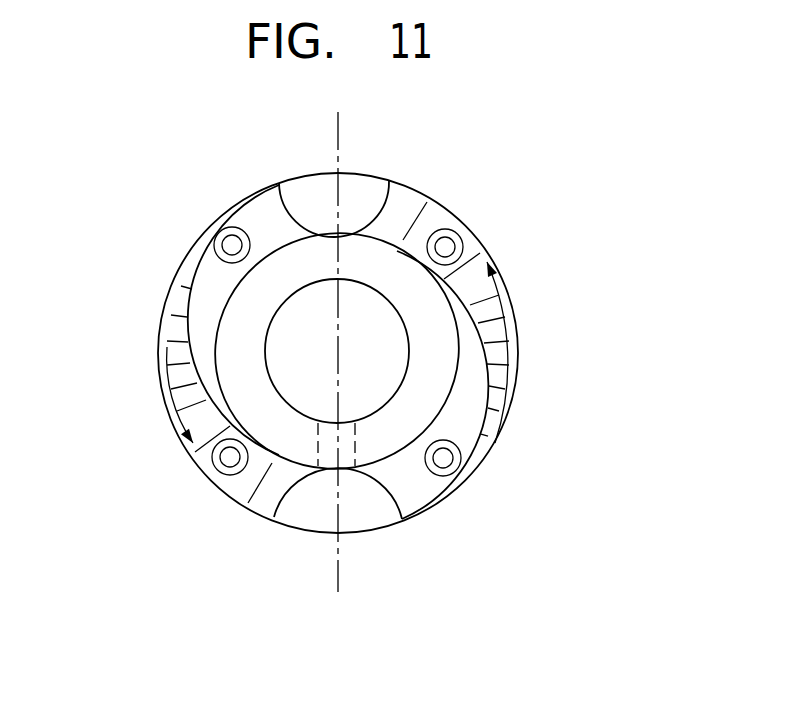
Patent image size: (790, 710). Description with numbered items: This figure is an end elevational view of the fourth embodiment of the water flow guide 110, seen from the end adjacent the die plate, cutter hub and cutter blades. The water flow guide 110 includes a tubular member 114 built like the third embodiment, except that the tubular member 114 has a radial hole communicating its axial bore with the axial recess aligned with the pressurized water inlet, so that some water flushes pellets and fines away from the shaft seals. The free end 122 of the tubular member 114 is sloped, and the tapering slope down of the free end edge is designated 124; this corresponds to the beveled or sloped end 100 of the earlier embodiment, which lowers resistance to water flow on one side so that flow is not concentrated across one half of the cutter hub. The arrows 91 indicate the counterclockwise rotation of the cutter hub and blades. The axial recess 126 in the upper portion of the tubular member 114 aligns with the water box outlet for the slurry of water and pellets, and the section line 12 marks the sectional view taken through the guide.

The section line 12- 12 is at (350, 125).
The arrows 91 is at (513, 320).
The sloped end 100 is at (187, 322).
The water flow guide 110 is at (460, 185).
The tubular member 114 is at (475, 237).
The free end 122 is at (463, 418).
The tapering slope 124 is at (513, 384).
The axial recess 126 is at (392, 204).